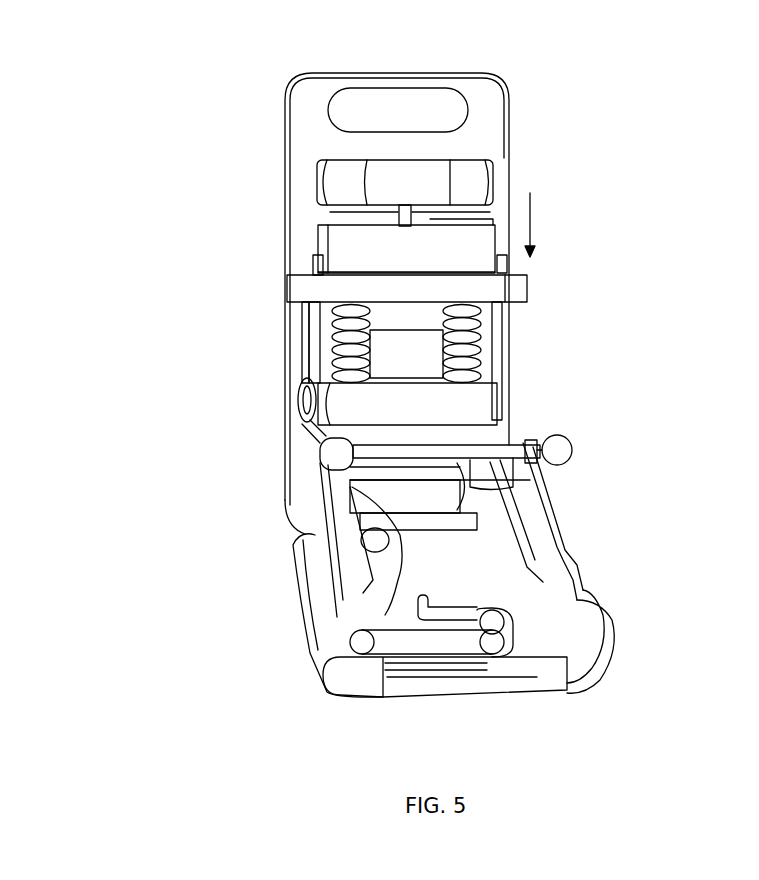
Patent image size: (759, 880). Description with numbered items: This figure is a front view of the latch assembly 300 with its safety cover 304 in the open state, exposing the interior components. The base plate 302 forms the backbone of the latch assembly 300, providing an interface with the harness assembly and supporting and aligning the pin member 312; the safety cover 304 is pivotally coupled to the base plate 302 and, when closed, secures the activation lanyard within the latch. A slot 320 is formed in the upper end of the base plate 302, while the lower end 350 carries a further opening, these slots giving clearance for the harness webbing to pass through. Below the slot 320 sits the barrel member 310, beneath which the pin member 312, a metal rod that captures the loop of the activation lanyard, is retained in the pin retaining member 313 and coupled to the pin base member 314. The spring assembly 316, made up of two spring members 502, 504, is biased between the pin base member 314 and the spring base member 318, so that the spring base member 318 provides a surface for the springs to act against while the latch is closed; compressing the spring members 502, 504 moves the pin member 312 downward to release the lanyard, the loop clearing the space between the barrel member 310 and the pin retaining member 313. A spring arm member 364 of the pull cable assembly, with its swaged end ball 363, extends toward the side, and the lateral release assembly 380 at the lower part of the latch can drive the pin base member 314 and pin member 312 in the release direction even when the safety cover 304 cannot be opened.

The latch assembly 300 is at (630, 239).
The base plate member 302 is at (288, 158).
The safety cover 304 is at (558, 547).
The barrel member 310 is at (325, 192).
The pin member 312 is at (400, 215).
The pin retaining member 313 is at (352, 247).
The pin base member 314 is at (365, 288).
The spring assembly 316 is at (302, 357).
The spring base member 318 is at (475, 397).
The slot 320 is at (428, 116).
The lower end 350 is at (511, 91).
The swaged end ball 363 is at (560, 450).
The spring arm member 364 is at (505, 428).
The lateral release assembly 380 is at (308, 588).
The spring member 502 is at (333, 344).
The spring member 504 is at (470, 342).